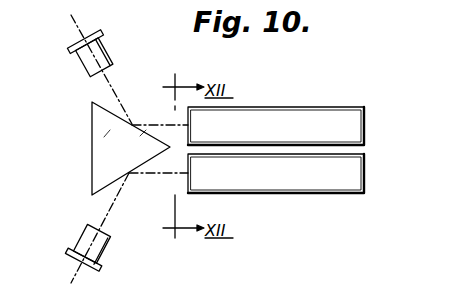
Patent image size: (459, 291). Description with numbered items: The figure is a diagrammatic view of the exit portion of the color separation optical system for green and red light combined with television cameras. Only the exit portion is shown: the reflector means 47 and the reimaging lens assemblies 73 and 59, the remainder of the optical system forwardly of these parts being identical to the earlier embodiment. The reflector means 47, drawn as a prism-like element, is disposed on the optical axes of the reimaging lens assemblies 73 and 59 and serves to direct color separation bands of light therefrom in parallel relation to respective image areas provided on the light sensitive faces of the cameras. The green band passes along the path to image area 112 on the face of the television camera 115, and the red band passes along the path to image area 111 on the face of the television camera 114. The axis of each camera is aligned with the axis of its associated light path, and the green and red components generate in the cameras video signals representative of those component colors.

The reflector means 47 is at (92, 137).
The reimaging lens assembly 73 is at (107, 45).
The reimaging lens assembly 59 is at (105, 242).
The image area 112 is at (187, 117).
The image area 111 is at (186, 181).
The television camera 115 is at (357, 117).
The television camera 114 is at (365, 178).